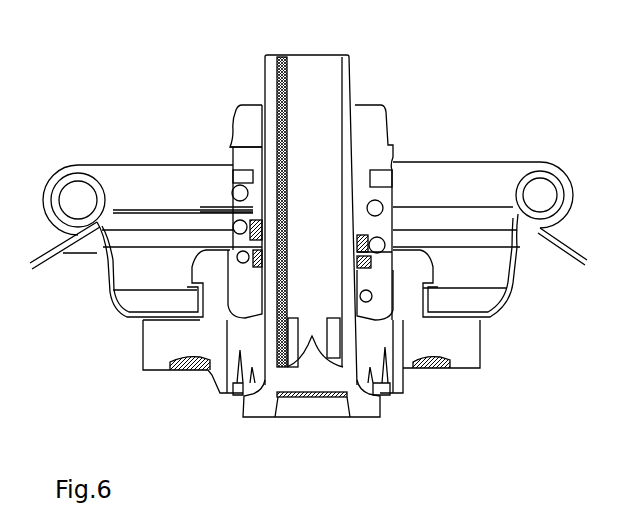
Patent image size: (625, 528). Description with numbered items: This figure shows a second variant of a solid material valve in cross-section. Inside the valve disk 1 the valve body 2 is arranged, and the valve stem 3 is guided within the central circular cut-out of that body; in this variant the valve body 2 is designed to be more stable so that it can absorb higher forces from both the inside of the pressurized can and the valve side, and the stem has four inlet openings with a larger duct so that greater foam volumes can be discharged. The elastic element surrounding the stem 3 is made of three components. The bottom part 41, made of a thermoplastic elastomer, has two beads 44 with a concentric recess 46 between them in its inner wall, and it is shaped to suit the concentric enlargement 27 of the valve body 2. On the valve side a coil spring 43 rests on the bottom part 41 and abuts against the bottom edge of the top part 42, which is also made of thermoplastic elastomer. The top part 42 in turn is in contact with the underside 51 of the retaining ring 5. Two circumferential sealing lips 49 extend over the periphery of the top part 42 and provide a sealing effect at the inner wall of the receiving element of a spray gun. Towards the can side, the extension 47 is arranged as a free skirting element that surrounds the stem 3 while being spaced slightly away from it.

The valve disk 1 is at (517, 273).
The valve body 2 is at (383, 320).
The valve stem 3 is at (348, 70).
The retaining ring 5 is at (381, 110).
The concentric enlargement 27 is at (403, 395).
The bottom part 41 is at (372, 290).
The top part 42 is at (237, 163).
The coil spring 43 is at (378, 205).
The beads 44 is at (243, 312).
The concentric recess 46 is at (367, 292).
The extension 47 is at (233, 212).
The sealing lips 49 is at (230, 147).
The underside 51 is at (250, 142).